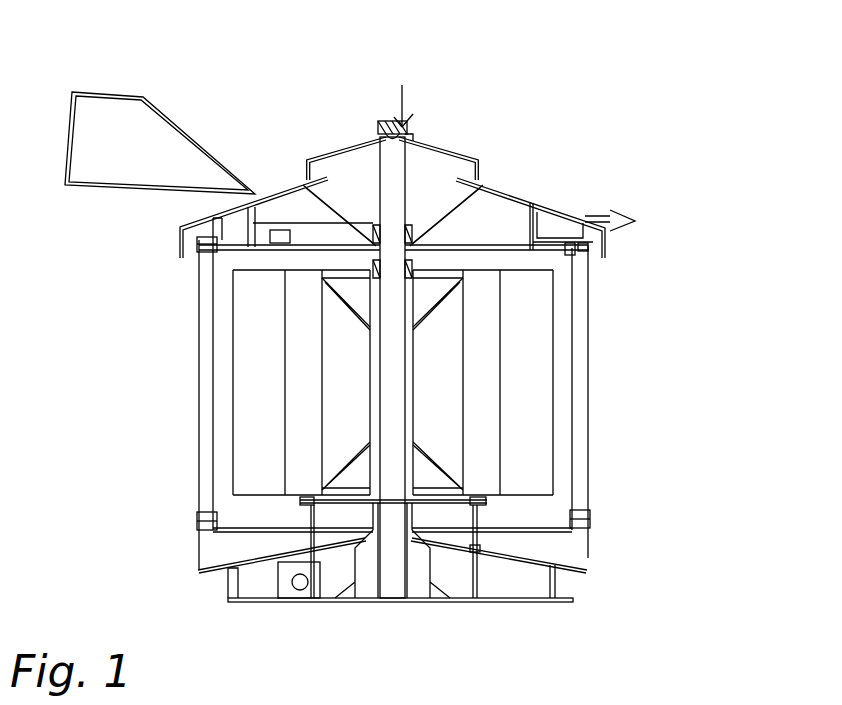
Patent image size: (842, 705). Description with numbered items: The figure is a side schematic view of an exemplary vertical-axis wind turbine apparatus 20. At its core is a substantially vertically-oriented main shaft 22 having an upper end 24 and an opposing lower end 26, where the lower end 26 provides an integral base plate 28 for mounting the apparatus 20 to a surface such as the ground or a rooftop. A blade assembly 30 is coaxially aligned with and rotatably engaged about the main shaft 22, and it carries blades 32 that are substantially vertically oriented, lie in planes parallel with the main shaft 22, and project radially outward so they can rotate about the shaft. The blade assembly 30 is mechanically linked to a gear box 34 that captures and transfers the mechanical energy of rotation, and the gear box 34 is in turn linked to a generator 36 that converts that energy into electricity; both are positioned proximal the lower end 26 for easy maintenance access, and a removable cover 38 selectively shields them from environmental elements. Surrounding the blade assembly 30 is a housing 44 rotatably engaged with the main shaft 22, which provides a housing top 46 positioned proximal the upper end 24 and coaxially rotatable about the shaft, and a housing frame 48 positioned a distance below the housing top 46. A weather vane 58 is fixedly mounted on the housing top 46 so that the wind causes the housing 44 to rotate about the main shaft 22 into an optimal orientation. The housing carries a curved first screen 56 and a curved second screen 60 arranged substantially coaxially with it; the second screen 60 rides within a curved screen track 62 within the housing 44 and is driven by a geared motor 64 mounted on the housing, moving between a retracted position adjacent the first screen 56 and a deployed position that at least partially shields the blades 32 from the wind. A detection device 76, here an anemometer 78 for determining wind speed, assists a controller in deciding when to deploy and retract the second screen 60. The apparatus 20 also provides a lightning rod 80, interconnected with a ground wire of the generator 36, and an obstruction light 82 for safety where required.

The vertical-axis wind turbine apparatus 20 is at (637, 118).
The main shaft 22 is at (412, 186).
The upper end 24 is at (375, 150).
The lower end 26 is at (396, 585).
The base plate 28 is at (574, 601).
The blade assembly 30 is at (540, 378).
The blade 32 is at (245, 421).
The gear box 34 is at (278, 584).
The generator 36 is at (300, 591).
The removable cover 38 is at (198, 570).
The housing 44 is at (554, 207).
The housing top 46 is at (507, 245).
The housing frame 48 is at (553, 585).
The first screen 56 is at (199, 370).
The weather vane 58 is at (107, 110).
The second screen 60 is at (213, 316).
The screen track 62 is at (520, 240).
The geared motor 64 is at (278, 230).
The detection device 76 is at (381, 112).
The anemometer 78 is at (378, 123).
The lightning rod 80 is at (405, 97).
The obstruction light 82 is at (417, 141).